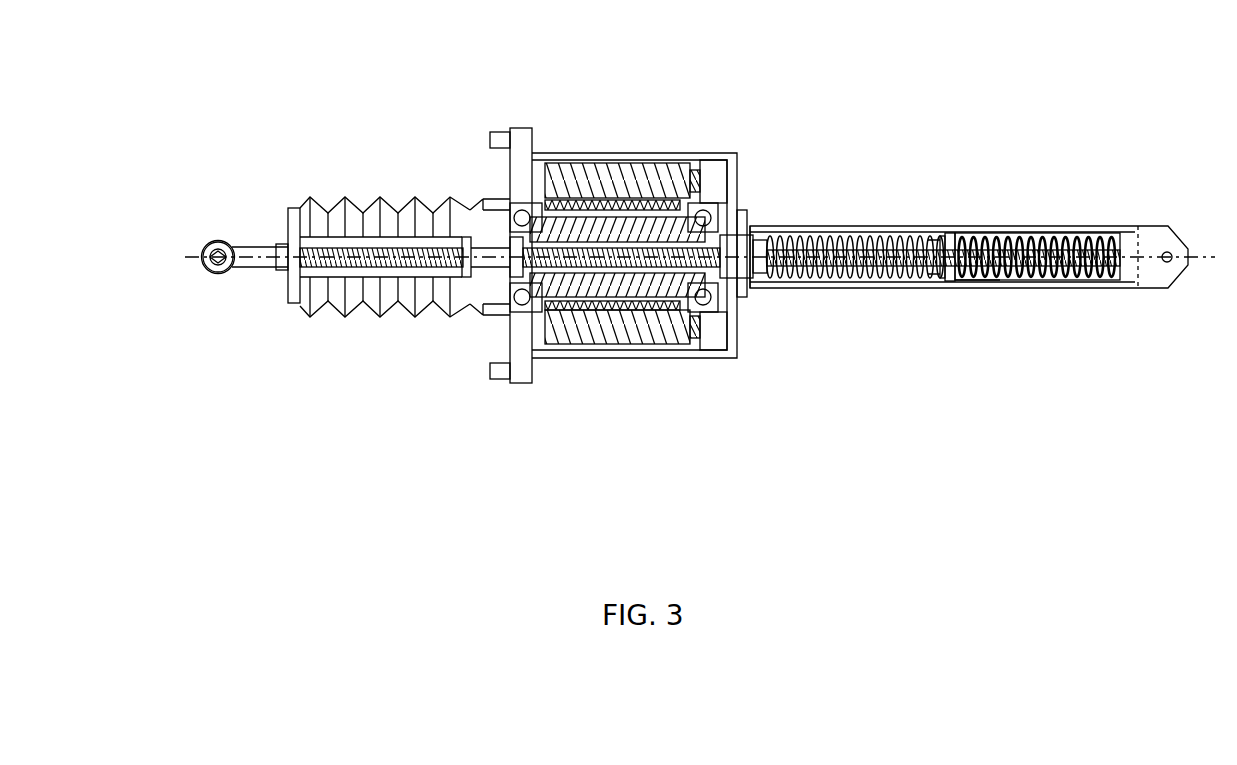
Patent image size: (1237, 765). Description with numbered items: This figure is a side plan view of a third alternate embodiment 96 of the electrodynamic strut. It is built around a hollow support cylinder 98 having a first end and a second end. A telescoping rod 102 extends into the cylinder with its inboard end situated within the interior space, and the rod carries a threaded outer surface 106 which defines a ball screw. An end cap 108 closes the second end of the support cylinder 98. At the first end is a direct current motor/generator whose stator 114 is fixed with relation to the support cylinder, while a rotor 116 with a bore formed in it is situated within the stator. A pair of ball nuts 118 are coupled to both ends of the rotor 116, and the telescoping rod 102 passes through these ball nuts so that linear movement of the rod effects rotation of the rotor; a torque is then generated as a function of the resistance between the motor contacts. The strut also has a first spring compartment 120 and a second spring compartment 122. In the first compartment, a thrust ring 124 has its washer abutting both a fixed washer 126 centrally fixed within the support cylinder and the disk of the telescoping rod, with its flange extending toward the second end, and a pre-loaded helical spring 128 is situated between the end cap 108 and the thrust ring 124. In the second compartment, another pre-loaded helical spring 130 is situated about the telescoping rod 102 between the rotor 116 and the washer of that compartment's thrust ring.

The alternate embodiment 96 is at (1105, 128).
The hollow support cylinder 98 is at (930, 277).
The telescoping rod 102 is at (255, 247).
The threaded outer surface 106 is at (845, 238).
The end cap 108 is at (1130, 230).
The stator 114 is at (623, 160).
The rotor 116 is at (643, 168).
The ball nuts 118 is at (740, 243).
The first spring compartment 120 is at (1002, 210).
The second spring compartment 122 is at (823, 295).
The thrust ring 124 is at (958, 287).
The fixed washer 126 is at (947, 283).
The pre-loaded helical spring 128 is at (990, 283).
The pre-loaded helical spring 130 is at (898, 238).